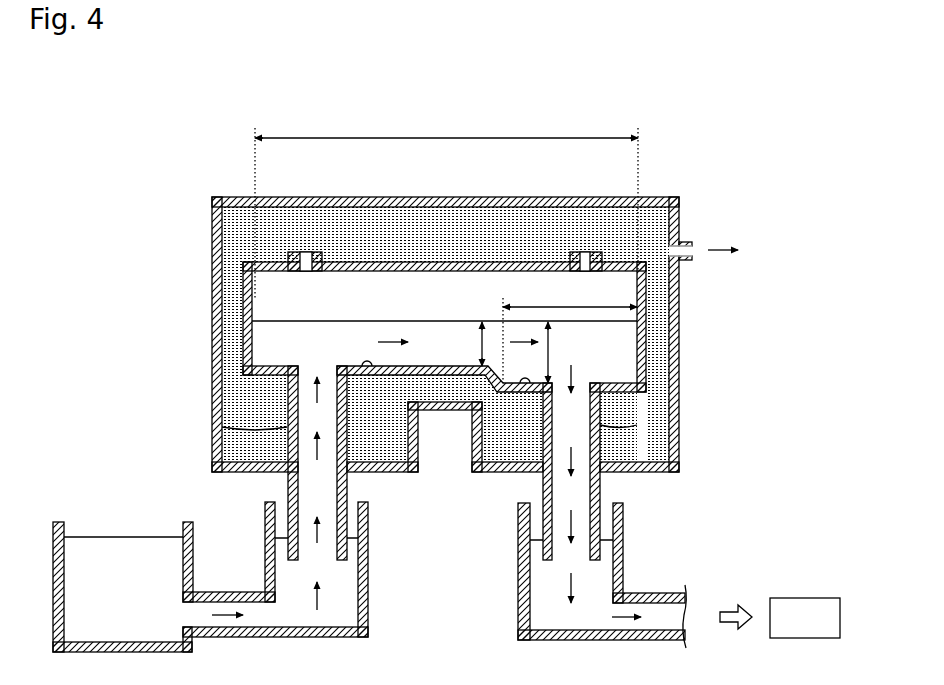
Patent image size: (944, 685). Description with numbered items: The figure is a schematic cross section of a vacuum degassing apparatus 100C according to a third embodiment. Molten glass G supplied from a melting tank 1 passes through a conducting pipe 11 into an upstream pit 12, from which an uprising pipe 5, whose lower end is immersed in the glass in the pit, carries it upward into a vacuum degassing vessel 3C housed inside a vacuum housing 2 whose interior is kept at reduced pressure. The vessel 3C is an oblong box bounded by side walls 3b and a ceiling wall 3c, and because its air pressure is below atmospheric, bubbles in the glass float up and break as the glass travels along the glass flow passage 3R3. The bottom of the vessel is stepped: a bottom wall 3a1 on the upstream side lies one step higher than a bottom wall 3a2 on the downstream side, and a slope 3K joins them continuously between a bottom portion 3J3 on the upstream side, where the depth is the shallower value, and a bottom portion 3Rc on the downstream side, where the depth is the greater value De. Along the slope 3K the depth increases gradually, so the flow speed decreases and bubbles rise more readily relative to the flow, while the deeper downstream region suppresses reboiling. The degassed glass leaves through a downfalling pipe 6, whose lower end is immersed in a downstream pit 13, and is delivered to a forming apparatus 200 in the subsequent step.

The vacuum degassing apparatus 100C is at (704, 190).
The vacuum housing 2 is at (212, 236).
The side wall 3b is at (243, 335).
The vacuum degassing vessel 3C is at (247, 304).
The ceiling wall 3c is at (432, 262).
The slope 3K is at (503, 363).
The glass flow passage 3R3 is at (354, 312).
The bottom portion on the downstream side 3Rc is at (543, 400).
The bottom portion on the upstream side 3J3 is at (373, 373).
The bottom wall on the upstream side 3a1 is at (442, 375).
The bottom wall on the downstream side 3a2 is at (525, 390).
The uprising pipe 5 is at (287, 428).
The downfalling pipe 6 is at (600, 433).
The melting tank 1 is at (49, 530).
The conducting pipe 11 is at (228, 590).
The upstream pit 12 is at (265, 512).
The downstream pit 13 is at (623, 522).
The forming apparatus 200 is at (805, 591).
The molten glass G is at (436, 345).